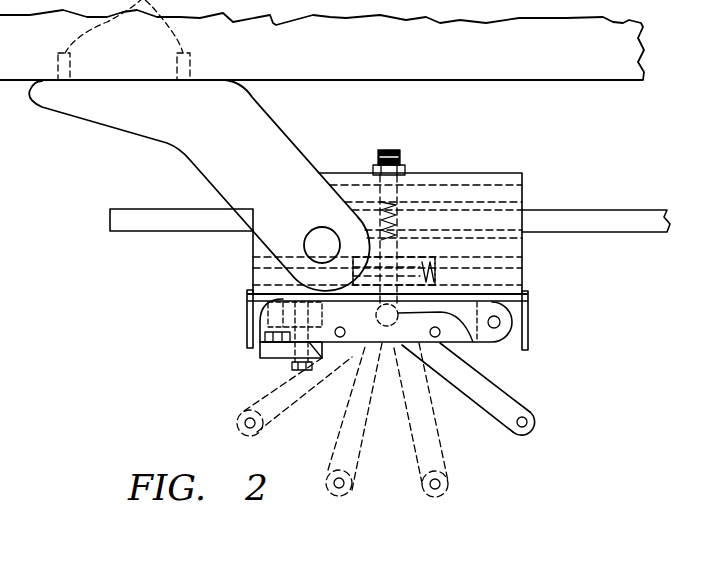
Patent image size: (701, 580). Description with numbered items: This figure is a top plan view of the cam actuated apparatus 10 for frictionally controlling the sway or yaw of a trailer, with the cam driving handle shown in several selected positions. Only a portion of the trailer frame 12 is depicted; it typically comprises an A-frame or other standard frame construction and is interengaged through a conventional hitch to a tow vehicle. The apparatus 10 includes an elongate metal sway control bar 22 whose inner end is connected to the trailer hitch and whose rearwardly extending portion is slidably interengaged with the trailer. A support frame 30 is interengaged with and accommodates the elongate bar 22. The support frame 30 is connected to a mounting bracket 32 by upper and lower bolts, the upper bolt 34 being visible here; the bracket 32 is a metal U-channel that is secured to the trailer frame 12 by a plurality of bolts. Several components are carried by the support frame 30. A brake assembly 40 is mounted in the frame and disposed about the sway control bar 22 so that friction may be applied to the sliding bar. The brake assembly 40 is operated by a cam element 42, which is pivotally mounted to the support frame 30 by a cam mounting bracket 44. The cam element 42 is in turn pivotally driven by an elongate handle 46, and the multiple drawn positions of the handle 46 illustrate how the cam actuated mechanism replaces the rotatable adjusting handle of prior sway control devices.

The cam actuated apparatus 10 is at (549, 178).
The trailer frame 12 is at (623, 34).
The sway control bar 22 is at (597, 210).
The support frame 30 is at (522, 268).
The mounting bracket 32 is at (142, 122).
The upper bolt 34 is at (322, 240).
The brake assembly 40 is at (522, 247).
The cam element 42 is at (458, 343).
The cam mounting bracket 44 is at (528, 312).
The handle 46 is at (503, 422).